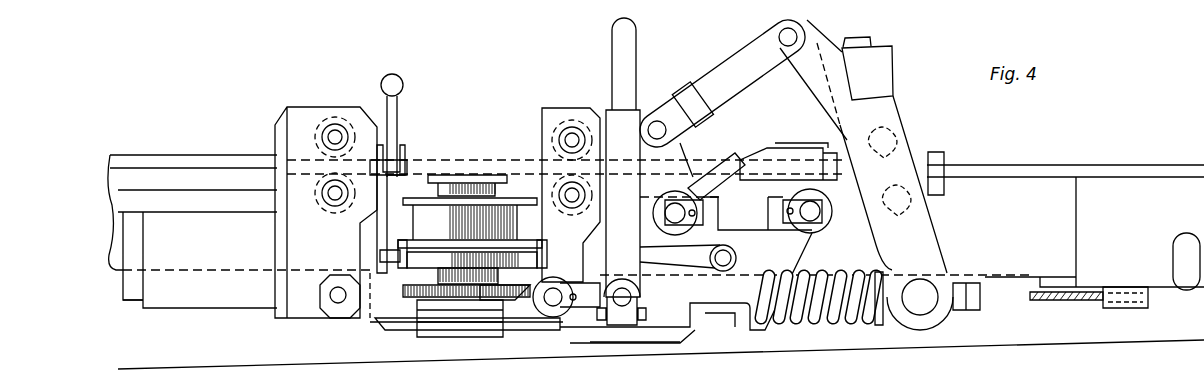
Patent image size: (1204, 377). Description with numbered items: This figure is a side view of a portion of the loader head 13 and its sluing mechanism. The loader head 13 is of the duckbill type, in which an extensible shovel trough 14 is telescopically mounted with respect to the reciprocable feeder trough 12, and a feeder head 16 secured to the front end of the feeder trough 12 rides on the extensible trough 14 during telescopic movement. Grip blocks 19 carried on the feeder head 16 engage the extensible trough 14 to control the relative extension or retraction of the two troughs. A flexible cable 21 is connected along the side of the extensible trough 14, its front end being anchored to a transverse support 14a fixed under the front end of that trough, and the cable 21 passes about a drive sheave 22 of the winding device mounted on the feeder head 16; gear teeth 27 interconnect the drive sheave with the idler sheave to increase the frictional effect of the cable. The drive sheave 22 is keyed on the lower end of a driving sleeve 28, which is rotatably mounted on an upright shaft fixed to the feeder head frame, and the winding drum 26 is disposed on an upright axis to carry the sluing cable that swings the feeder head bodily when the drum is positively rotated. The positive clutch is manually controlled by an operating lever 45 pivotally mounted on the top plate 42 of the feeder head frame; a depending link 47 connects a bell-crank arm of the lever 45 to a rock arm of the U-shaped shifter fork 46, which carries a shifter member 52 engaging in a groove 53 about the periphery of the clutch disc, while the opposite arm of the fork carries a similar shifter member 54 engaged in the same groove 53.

The feeder trough section 12 is at (222, 300).
The loader head 13 is at (1077, 156).
The extensible shovel trough 14 is at (224, 156).
The transverse support 14a is at (1148, 300).
The feeder head 16 is at (911, 114).
The grip blocks 19 is at (930, 153).
The flexible cables 21 is at (1070, 300).
The drive sheave 22 is at (442, 307).
The winding drum 26 is at (435, 210).
The gear teeth 27 is at (512, 303).
The driving sleeve 28 is at (456, 282).
The top plate 42 is at (485, 183).
The operating lever 45 is at (392, 120).
The shifter fork 46 is at (392, 242).
The depending link 47 is at (383, 228).
The shifter member 52 is at (388, 257).
The groove 53 is at (516, 250).
The shifter member 54 is at (560, 281).